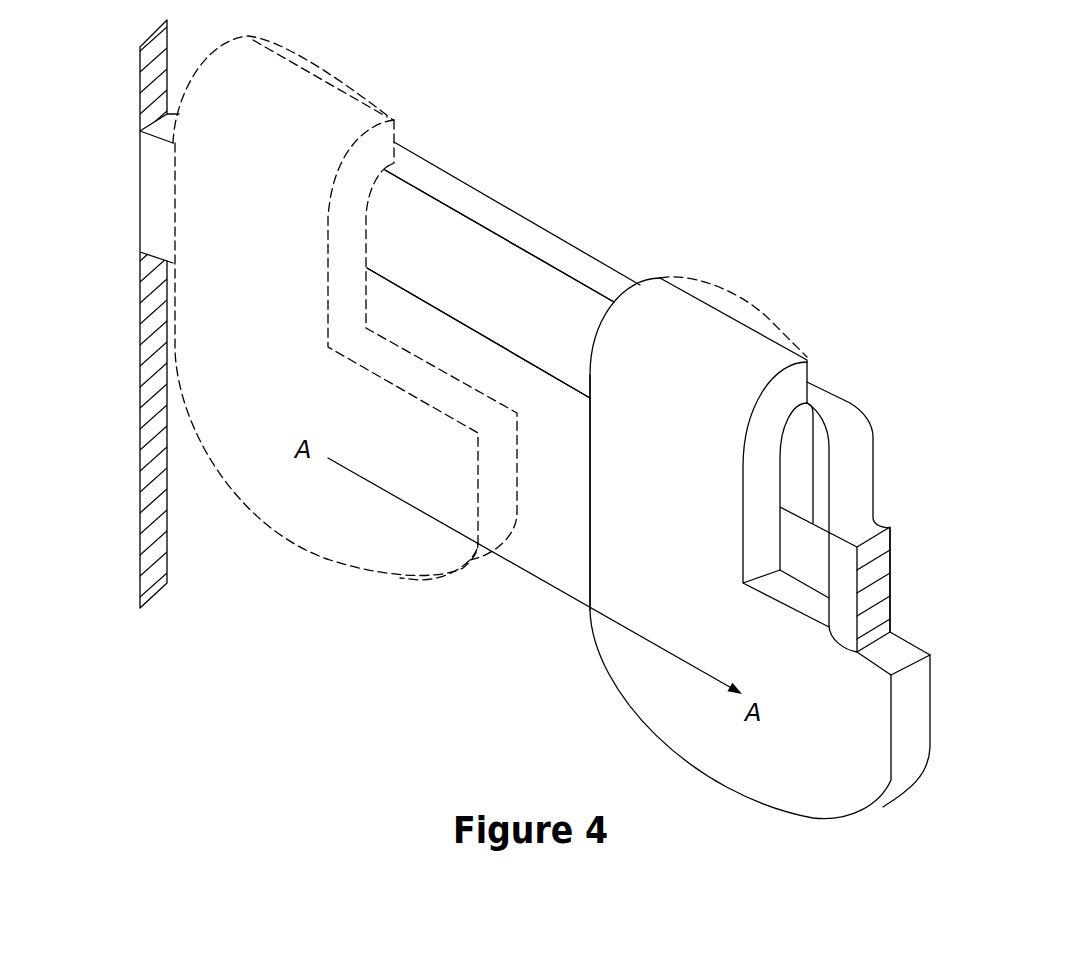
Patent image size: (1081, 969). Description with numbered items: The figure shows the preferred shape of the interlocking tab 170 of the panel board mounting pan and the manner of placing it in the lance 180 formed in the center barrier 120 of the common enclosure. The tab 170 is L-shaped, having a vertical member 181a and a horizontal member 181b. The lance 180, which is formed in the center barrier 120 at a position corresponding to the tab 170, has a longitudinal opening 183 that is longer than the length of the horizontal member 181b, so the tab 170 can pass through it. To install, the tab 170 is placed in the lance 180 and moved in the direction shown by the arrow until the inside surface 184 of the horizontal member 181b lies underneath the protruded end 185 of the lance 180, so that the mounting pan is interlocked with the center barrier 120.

The center barrier 120 is at (140, 400).
The tab 170 is at (797, 790).
The lance 180 is at (447, 186).
The vertical member 181a is at (707, 461).
The horizontal member 181b is at (855, 740).
The longitudinal opening 183 is at (543, 327).
The inside surface 184 is at (897, 650).
The protruded end 185 is at (847, 627).